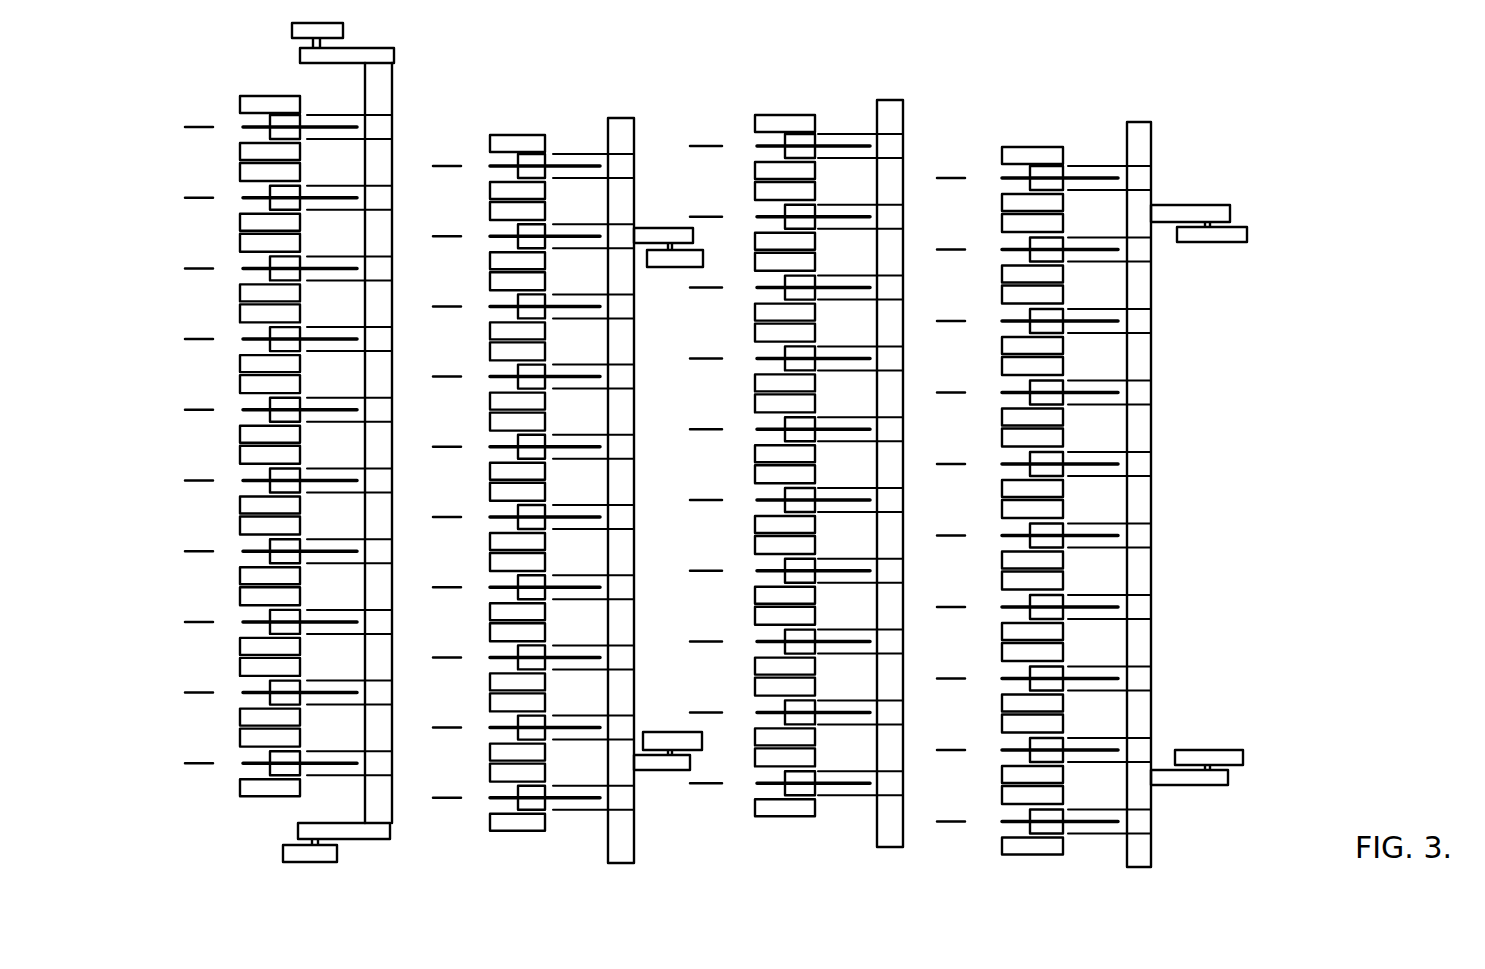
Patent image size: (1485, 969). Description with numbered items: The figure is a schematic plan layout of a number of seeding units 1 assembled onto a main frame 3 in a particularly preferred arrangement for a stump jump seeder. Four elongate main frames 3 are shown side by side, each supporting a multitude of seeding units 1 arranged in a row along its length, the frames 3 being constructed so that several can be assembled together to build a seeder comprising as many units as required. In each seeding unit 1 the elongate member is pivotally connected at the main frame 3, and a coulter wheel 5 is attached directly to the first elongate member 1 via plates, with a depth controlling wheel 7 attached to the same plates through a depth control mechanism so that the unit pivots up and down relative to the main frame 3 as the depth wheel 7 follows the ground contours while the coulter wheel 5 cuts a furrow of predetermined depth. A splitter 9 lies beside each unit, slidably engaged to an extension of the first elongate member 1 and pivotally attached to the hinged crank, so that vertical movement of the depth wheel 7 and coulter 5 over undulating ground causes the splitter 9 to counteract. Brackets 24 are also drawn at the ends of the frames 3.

The first elongate member 1 is at (350, 140).
The main frame 3 is at (385, 312).
The coulter wheel 5 is at (345, 258).
The depth controlling wheel 7 is at (240, 295).
The splitter 9 is at (190, 197).
The mounting bracket 24 is at (292, 33).